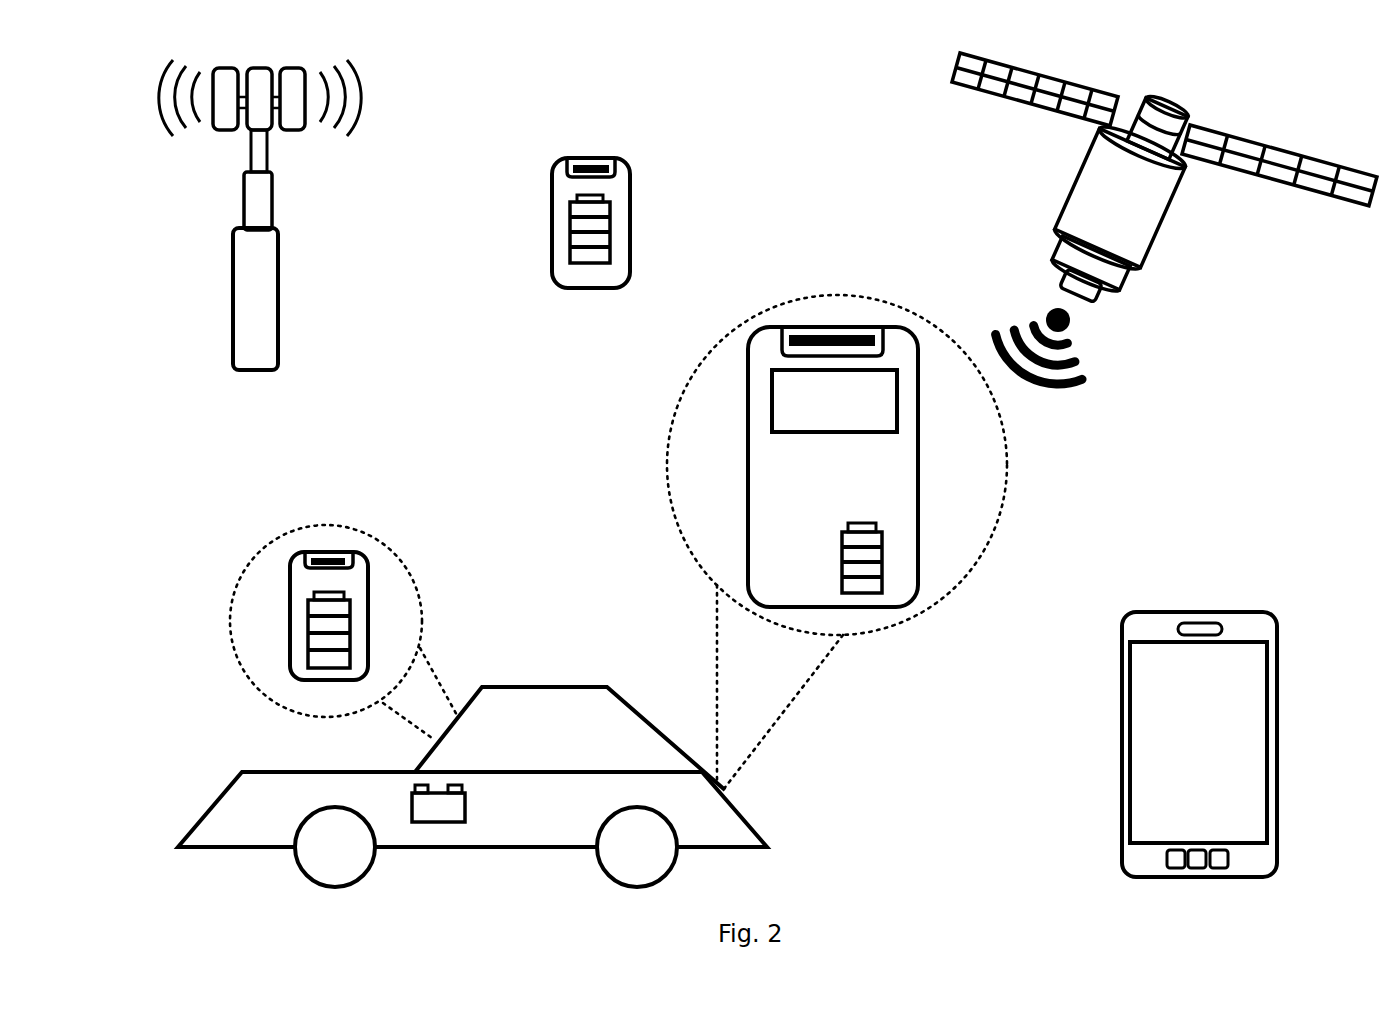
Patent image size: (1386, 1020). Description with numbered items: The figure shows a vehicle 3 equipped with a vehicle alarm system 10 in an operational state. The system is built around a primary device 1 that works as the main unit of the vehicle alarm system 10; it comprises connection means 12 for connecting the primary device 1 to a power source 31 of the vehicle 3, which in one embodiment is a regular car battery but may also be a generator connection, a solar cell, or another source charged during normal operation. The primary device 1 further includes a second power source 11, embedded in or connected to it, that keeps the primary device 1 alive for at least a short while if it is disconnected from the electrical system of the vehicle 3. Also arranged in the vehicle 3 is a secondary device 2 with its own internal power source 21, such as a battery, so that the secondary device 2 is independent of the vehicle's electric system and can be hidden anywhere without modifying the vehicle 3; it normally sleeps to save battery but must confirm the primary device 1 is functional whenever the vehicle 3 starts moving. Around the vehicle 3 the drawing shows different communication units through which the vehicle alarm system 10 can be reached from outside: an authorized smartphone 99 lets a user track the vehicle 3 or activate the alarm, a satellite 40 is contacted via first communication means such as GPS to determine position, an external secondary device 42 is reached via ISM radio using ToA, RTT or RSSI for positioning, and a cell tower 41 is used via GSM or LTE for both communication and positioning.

The primary device 1 is at (849, 435).
The second power source 11 is at (880, 572).
The connection means 12 is at (898, 395).
The secondary device 2 is at (277, 586).
The internal power source 21 is at (305, 646).
The vehicle 3 is at (472, 756).
The power source 31 is at (452, 822).
The vehicle alarm system 10 is at (623, 487).
The satellite 40 is at (1050, 212).
The cell tower 41 is at (278, 295).
The external secondary device 42 is at (558, 160).
The smartphone 99 is at (1115, 800).